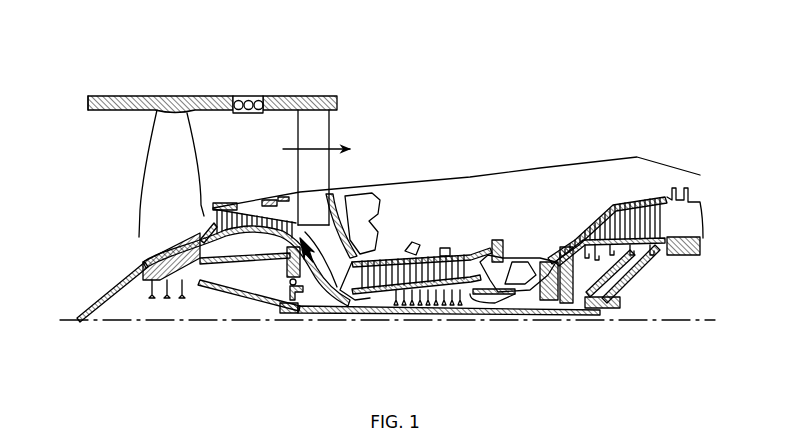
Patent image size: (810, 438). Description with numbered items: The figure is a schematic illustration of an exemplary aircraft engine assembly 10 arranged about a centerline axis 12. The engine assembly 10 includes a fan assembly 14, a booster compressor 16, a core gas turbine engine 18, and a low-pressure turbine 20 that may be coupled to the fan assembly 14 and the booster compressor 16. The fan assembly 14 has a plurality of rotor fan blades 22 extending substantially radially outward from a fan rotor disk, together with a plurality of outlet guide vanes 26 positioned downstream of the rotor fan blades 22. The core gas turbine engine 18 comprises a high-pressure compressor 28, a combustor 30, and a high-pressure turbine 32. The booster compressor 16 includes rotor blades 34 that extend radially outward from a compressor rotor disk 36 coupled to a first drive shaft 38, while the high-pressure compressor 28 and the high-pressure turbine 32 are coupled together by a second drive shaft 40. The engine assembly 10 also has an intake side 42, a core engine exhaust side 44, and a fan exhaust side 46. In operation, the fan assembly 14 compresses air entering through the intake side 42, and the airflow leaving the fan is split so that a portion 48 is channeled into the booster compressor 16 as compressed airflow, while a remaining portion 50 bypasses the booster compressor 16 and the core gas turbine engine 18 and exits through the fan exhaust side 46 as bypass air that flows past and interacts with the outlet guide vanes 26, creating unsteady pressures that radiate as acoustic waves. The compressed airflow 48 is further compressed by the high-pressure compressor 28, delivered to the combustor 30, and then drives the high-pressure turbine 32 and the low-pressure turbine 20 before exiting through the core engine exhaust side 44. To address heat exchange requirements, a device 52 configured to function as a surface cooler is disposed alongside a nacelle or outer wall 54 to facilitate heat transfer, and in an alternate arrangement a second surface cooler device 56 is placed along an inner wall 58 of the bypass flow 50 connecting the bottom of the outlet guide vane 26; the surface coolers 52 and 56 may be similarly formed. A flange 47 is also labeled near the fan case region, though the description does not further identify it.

The aircraft engine assembly 10 is at (547, 80).
The centerline axis 12 is at (167, 324).
The fan assembly 14 is at (137, 173).
The booster compressor 16 is at (235, 203).
The core gas turbine engine 18 is at (464, 220).
The low-pressure turbine 20 is at (649, 192).
The rotor fan blades 22 is at (182, 144).
The outlet guide vanes 26 is at (327, 161).
The high-pressure compressor 28 is at (366, 257).
The combustor 30 is at (508, 265).
The high-pressure turbine 32 is at (525, 303).
The rotor blades 34 is at (220, 202).
The compressor rotor disk 36 is at (227, 238).
The first drive shaft 38 is at (288, 314).
The second drive shaft 40 is at (492, 303).
The intake side 42 is at (94, 127).
The core engine exhaust side 44 is at (703, 200).
The fan exhaust side 46 is at (340, 113).
The fan case flange 47 is at (280, 196).
The portion of the airflow 48 is at (316, 232).
The remaining portion of the airflow 50 is at (295, 149).
The surface cooler device 52 is at (241, 96).
The outer wall 54 is at (134, 96).
The surface cooler device 56 is at (266, 199).
The inner wall 58 is at (420, 180).